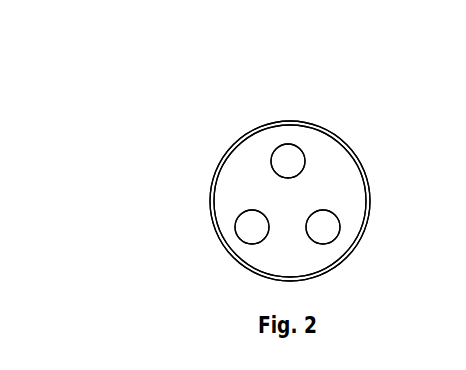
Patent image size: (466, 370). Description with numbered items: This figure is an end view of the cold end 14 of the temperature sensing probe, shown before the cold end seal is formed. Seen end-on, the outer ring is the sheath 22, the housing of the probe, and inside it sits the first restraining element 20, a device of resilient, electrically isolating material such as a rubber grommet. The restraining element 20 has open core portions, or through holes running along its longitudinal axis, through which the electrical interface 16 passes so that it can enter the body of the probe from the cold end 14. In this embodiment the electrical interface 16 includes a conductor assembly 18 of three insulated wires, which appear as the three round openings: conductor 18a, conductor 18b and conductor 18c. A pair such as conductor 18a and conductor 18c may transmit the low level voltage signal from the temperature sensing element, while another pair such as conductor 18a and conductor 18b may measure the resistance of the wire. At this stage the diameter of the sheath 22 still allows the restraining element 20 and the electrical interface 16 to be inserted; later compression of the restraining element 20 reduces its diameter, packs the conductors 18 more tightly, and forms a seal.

The cold end 14 is at (291, 78).
The electrical interface 16 is at (288, 252).
The conductor assembly 18 is at (326, 147).
The conductor 18a is at (328, 210).
The conductor 18b is at (235, 232).
The conductor 18c is at (288, 143).
The first restraining element 20 is at (223, 166).
The sheath 22 is at (350, 250).